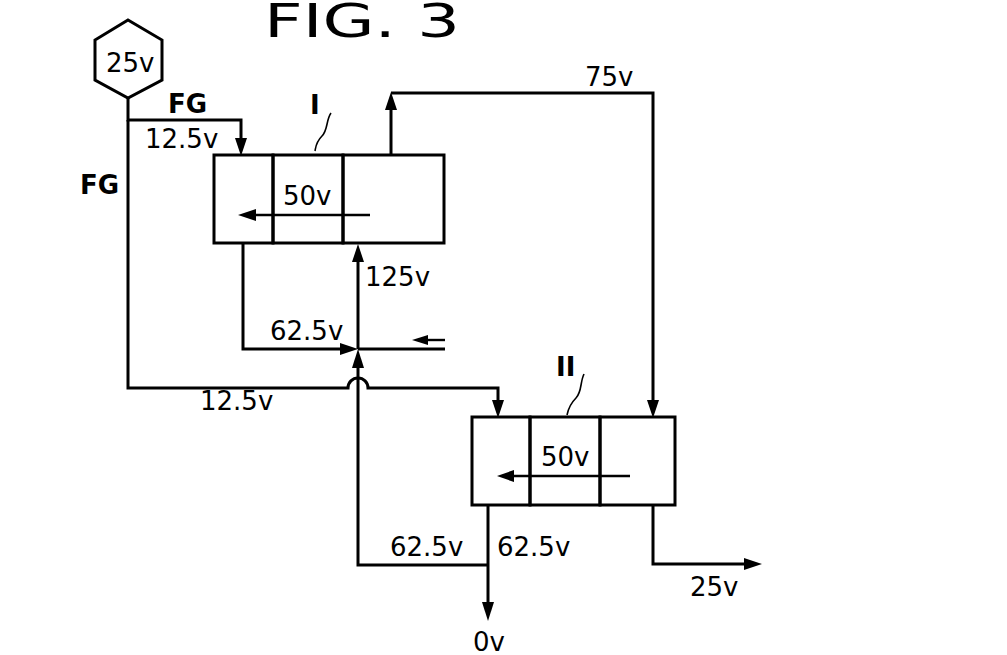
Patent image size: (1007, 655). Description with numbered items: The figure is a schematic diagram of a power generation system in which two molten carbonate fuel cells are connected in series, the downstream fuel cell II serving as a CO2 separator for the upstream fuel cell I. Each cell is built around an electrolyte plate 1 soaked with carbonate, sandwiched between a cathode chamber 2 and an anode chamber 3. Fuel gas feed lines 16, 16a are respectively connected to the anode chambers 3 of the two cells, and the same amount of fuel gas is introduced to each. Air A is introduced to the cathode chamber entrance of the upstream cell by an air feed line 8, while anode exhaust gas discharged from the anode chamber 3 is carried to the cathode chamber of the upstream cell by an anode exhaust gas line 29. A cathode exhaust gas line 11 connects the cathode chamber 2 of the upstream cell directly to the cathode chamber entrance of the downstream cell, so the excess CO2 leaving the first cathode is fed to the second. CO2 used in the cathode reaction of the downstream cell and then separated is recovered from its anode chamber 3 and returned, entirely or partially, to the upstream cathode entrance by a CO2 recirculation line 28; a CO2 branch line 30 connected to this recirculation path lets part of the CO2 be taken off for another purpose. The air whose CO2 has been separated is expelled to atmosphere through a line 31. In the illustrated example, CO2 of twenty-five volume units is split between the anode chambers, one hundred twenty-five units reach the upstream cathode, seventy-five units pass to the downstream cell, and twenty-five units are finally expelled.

The fuel gas feed line 16 is at (233, 119).
The fuel gas feed line 16a is at (130, 329).
The cathode exhaust gas line 11 is at (524, 66).
The electrolyte plate 1 is at (320, 244).
The cathode chamber 2 is at (436, 216).
The anode chamber 3 is at (220, 226).
The anode exhaust gas line 29 is at (243, 307).
The air feed line 8 is at (388, 348).
The CO2 recirculation line 28 is at (358, 513).
The CO2 branch line 30 is at (492, 585).
The line 31 is at (685, 563).